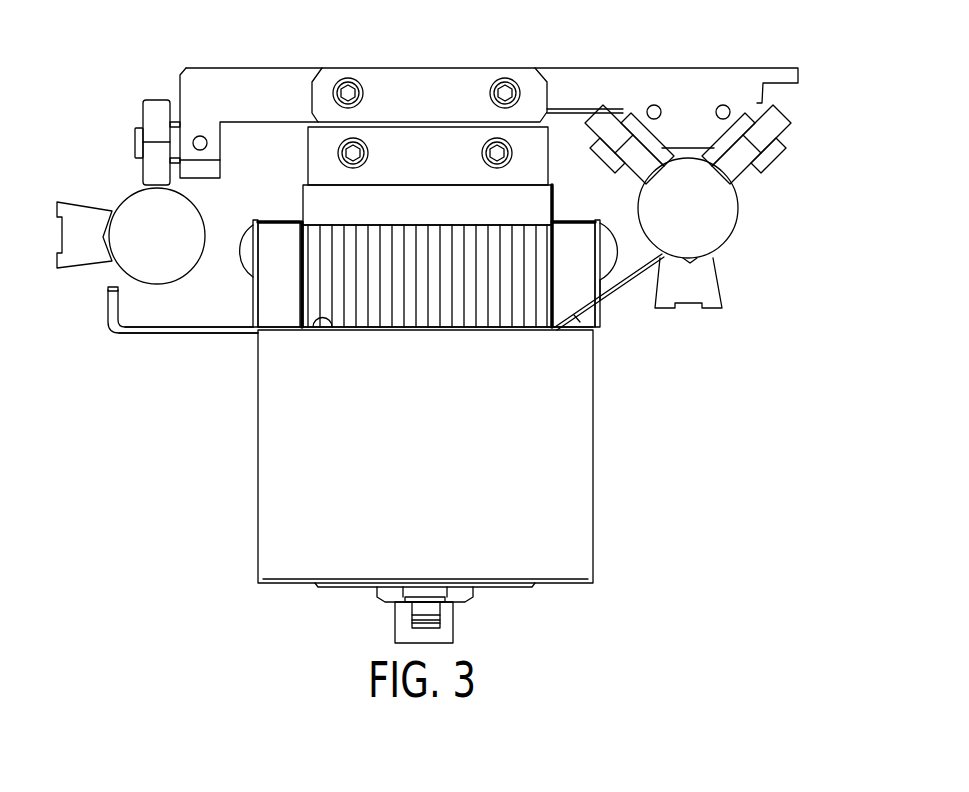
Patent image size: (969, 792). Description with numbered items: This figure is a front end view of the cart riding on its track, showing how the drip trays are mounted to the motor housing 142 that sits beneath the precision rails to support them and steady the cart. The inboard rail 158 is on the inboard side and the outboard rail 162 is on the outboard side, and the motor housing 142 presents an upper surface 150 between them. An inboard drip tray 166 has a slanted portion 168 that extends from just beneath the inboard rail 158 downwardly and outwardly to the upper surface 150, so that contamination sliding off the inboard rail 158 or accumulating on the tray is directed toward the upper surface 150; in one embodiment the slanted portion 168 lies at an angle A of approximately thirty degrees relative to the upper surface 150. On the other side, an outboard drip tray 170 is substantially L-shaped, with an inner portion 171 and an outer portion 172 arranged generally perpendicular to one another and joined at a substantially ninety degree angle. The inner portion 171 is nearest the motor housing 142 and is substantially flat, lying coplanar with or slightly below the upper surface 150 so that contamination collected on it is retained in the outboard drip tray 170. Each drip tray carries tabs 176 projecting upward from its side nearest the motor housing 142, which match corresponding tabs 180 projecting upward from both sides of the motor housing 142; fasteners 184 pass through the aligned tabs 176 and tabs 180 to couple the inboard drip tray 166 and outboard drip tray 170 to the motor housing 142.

The motor housing 142 is at (573, 473).
The upper surface 150 is at (312, 320).
The inboard rail 158 is at (722, 215).
The outboard rail 162 is at (142, 200).
The inboard drip tray 166 is at (628, 278).
The slanted portion 168 is at (602, 285).
The outboard drip tray 170 is at (150, 335).
The inner portion 171 is at (200, 335).
The outer portion 172 is at (105, 303).
The tabs 176 is at (248, 287).
The tabs 180 is at (283, 235).
The fasteners 184 is at (243, 252).
The angle A is at (578, 322).